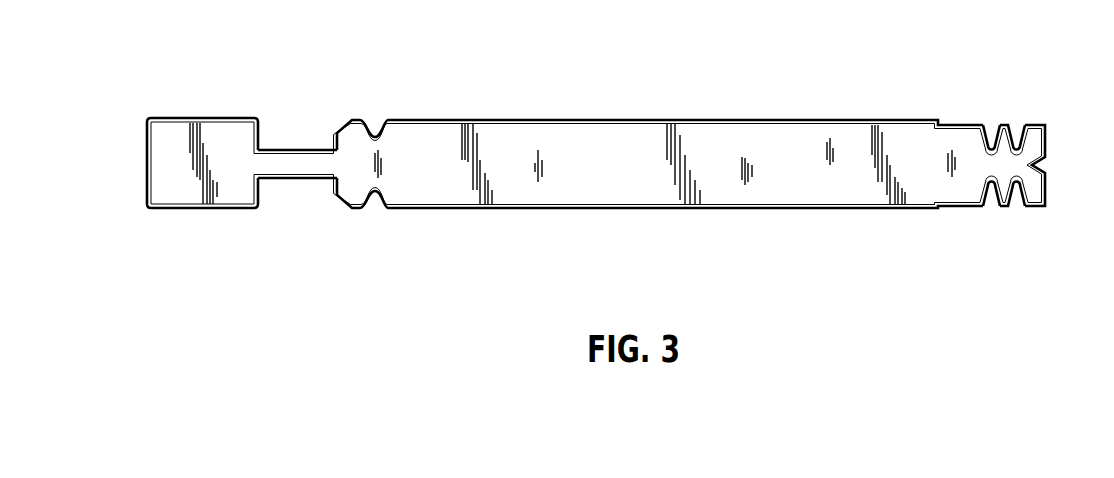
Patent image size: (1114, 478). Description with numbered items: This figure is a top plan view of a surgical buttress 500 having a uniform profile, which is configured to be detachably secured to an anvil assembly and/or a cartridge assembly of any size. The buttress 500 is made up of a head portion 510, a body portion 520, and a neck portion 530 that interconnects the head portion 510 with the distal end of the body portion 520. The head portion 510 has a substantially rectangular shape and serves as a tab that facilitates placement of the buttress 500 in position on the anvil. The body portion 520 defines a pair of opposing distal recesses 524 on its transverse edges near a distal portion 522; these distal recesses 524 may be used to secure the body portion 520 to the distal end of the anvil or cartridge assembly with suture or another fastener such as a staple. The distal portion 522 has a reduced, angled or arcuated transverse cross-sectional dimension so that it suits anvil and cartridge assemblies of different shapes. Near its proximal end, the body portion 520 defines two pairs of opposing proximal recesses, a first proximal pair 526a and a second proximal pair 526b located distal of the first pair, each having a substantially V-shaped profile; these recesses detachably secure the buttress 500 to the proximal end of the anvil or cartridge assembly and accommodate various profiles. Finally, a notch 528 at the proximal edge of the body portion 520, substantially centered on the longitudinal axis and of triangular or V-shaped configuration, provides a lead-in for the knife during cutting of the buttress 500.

The surgical buttress 500 is at (690, 71).
The head portion 510 is at (230, 114).
The body portion 520 is at (727, 117).
The distal portion 522 is at (343, 203).
The distal recesses 524 is at (376, 127).
The first proximal pair of recesses 526a is at (1017, 125).
The second proximal pair of recesses 526b is at (990, 125).
The notch 528 is at (1049, 163).
The neck portion 530 is at (293, 149).